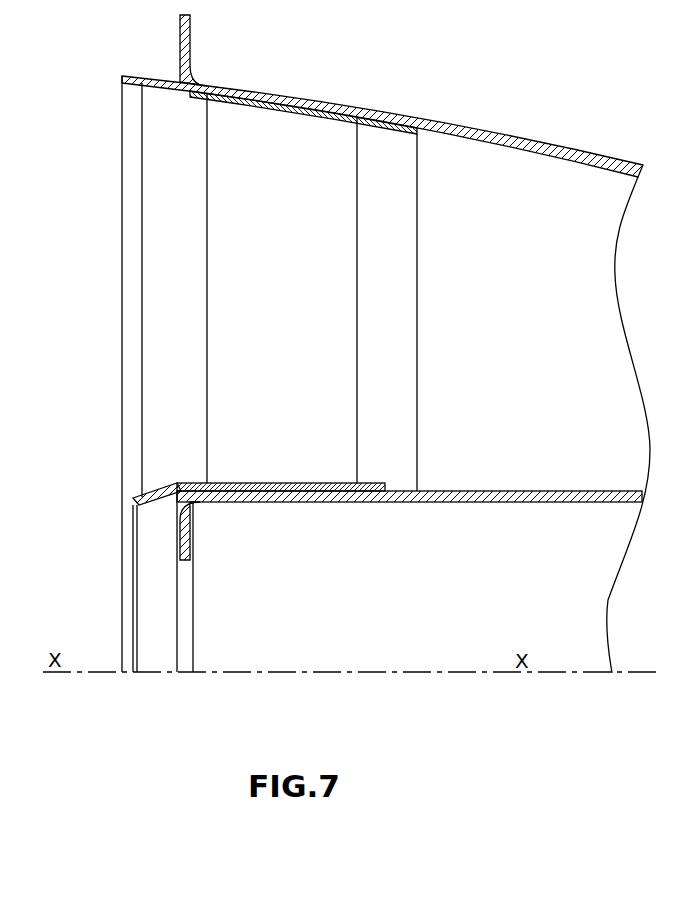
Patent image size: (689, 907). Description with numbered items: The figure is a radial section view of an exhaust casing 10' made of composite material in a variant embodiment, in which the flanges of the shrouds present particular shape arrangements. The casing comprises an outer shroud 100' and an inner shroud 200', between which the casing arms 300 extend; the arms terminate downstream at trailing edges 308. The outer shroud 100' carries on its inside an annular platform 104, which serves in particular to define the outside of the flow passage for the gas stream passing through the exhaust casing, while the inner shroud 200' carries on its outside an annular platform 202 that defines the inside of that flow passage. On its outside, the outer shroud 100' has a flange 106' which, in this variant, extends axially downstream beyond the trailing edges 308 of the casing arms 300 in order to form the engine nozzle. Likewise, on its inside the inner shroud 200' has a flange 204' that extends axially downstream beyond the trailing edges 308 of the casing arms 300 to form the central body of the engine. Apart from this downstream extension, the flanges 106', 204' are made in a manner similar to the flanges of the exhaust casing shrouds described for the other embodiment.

The exhaust casing 10' is at (586, 347).
The outer shroud 100' is at (382, 96).
The annular platform 104 is at (150, 77).
The flange of the outer shroud 106' is at (303, 88).
The casing arms 300 is at (247, 262).
The trailing edges 308 is at (358, 290).
The inner shroud 200' is at (409, 541).
The annular platform 202 is at (160, 489).
The flange of the inner shroud 204' is at (281, 514).